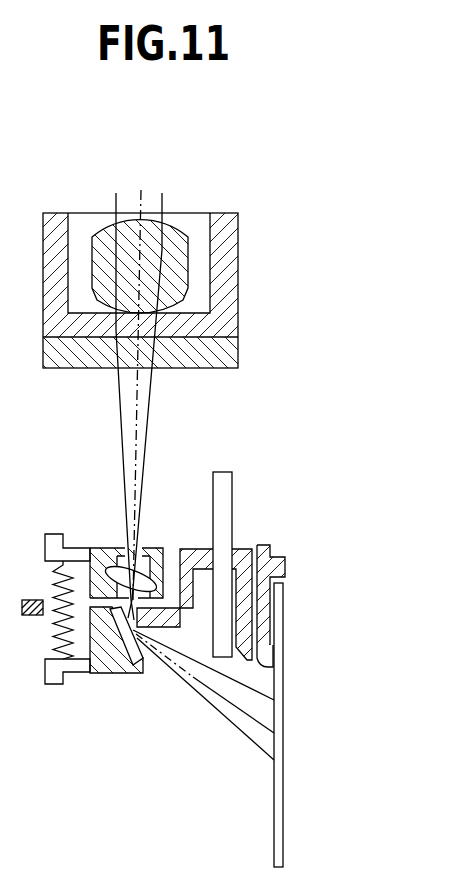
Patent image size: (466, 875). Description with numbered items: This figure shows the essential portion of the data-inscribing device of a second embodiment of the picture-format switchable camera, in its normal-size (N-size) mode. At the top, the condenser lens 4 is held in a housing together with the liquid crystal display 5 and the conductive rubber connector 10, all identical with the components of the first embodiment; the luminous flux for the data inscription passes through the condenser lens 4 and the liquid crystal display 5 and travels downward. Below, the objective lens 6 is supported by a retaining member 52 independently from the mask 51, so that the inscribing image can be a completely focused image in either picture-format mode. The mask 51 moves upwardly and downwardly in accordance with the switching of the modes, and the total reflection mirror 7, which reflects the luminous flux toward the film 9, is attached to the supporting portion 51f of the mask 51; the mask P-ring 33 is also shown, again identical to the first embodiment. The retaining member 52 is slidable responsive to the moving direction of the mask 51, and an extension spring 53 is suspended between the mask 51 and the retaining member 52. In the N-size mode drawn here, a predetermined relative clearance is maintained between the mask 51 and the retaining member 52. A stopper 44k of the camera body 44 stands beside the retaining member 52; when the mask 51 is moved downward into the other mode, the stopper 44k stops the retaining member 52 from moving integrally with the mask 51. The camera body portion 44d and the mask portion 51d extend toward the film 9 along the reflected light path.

The condenser lens 4 is at (177, 245).
The conductive rubber connector 10 is at (224, 268).
The liquid crystal display 5 is at (217, 362).
The retaining member 52 is at (97, 548).
The objective lens 6 is at (139, 575).
The extension spring 53 is at (54, 588).
The stopper 44k is at (27, 617).
The total reflection mirror 7 is at (135, 673).
The supporting portion 51f is at (99, 674).
The mask P-ring 33 is at (232, 487).
The mask 51 is at (240, 556).
The camera body 44 is at (233, 450).
The camera body portion 44d is at (278, 676).
The mask portion 51d is at (281, 706).
The film 9 is at (284, 817).